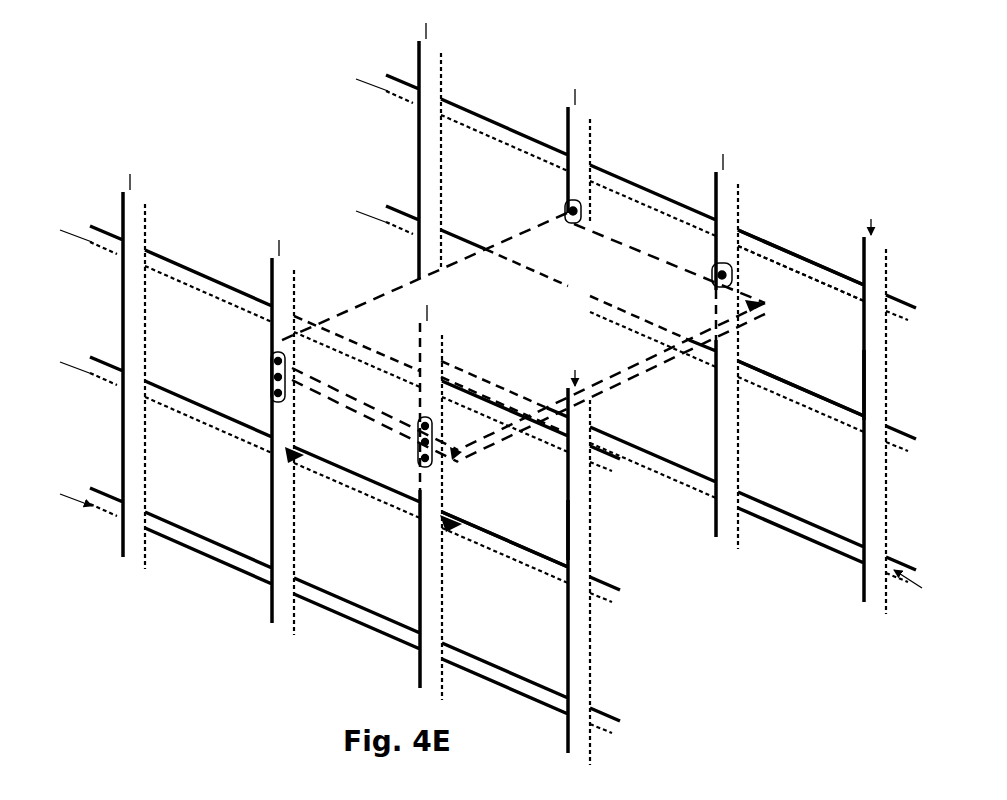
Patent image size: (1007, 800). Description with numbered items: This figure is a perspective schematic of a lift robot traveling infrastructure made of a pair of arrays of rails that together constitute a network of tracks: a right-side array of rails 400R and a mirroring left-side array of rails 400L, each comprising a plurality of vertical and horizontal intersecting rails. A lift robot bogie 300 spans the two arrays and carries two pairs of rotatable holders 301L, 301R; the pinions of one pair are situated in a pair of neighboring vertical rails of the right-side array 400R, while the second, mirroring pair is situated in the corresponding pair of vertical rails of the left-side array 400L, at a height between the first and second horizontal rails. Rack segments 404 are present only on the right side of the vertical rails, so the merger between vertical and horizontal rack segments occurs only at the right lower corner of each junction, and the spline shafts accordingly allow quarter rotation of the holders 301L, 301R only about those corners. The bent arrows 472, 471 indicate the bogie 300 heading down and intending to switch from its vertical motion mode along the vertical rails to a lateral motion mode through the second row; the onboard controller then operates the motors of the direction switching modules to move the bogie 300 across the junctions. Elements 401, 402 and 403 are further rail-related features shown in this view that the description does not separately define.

The lift robot bogie 300 is at (536, 308).
The left rotatable holder 301L is at (272, 368).
The right rotatable holder 301R is at (418, 438).
The left-side array of rails 400L is at (638, 667).
The right-side array of rails 400R is at (819, 604).
The upper row beam 401 is at (808, 259).
The lower row beam 402 is at (761, 255).
The row beam 403 is at (860, 372).
The rack segments 404 is at (863, 385).
The bent arrow 471 is at (440, 518).
The bent arrow 472 is at (285, 448).